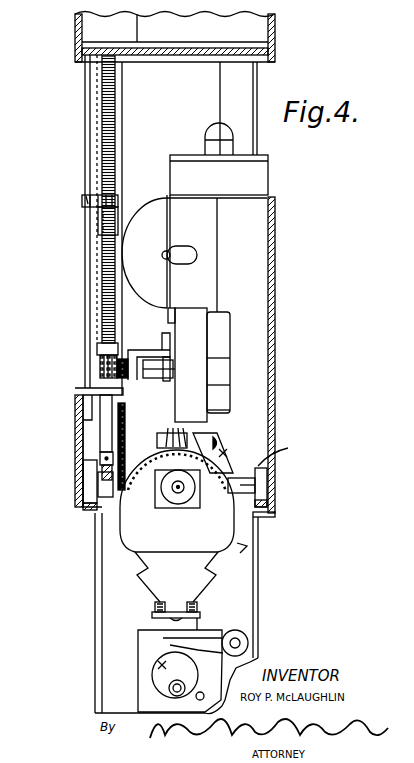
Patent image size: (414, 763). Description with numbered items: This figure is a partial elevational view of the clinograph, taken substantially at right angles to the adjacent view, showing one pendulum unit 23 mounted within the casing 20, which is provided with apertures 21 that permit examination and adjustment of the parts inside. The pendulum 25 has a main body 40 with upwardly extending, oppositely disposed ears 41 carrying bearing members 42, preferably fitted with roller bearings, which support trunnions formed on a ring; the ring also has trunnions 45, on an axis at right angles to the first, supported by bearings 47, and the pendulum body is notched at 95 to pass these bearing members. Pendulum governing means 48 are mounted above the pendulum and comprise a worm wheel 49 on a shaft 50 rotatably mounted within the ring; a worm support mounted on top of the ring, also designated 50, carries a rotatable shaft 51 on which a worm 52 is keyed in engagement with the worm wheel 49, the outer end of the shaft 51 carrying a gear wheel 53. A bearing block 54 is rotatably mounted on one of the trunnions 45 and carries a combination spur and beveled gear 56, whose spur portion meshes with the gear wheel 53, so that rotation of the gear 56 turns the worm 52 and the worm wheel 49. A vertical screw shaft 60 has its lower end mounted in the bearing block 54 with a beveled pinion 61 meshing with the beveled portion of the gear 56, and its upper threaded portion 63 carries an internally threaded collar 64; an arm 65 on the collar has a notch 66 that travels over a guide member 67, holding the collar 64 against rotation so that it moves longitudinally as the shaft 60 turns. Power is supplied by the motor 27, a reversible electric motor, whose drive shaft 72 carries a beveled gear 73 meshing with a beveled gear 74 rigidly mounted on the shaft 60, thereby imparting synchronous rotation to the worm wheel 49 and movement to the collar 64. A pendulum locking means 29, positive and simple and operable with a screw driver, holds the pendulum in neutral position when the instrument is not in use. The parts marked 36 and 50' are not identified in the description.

The casing 20 is at (275, 44).
The apertures 21 is at (258, 84).
The pendulum unit 23 is at (243, 549).
The pendulum (plumb bob) 25 is at (226, 531).
The motor 27 is at (246, 253).
The pendulum locking means 29 is at (160, 666).
The guide 36 is at (99, 94).
The main body 40 is at (150, 585).
The ears 41 is at (137, 536).
The bearing members 42 is at (160, 508).
The trunnions 45 is at (88, 498).
The bearings 47 is at (90, 474).
The pendulum governing means 48 is at (224, 453).
The worm wheel 49 is at (224, 456).
The shaft (worm support) 50 is at (177, 501).
The gear head extension 50' is at (262, 415).
The rotatable shaft 51 is at (220, 443).
The worm 52 is at (165, 434).
The gear wheel 53 is at (100, 412).
The bearing block 54 is at (120, 497).
The combination spur and beveled gear 56 is at (137, 500).
The vertical screw shaft 60 is at (107, 428).
The beveled pinion 61 is at (100, 461).
The threaded portion 63 is at (118, 94).
The internally threaded collar 64 is at (100, 225).
The arm 65 is at (82, 204).
The notch 66 is at (84, 196).
The guide member 67 is at (87, 142).
The drive shaft 72 is at (147, 359).
The beveled gear 73 is at (112, 370).
The beveled gear 74 is at (103, 362).
The notch 95 is at (215, 563).